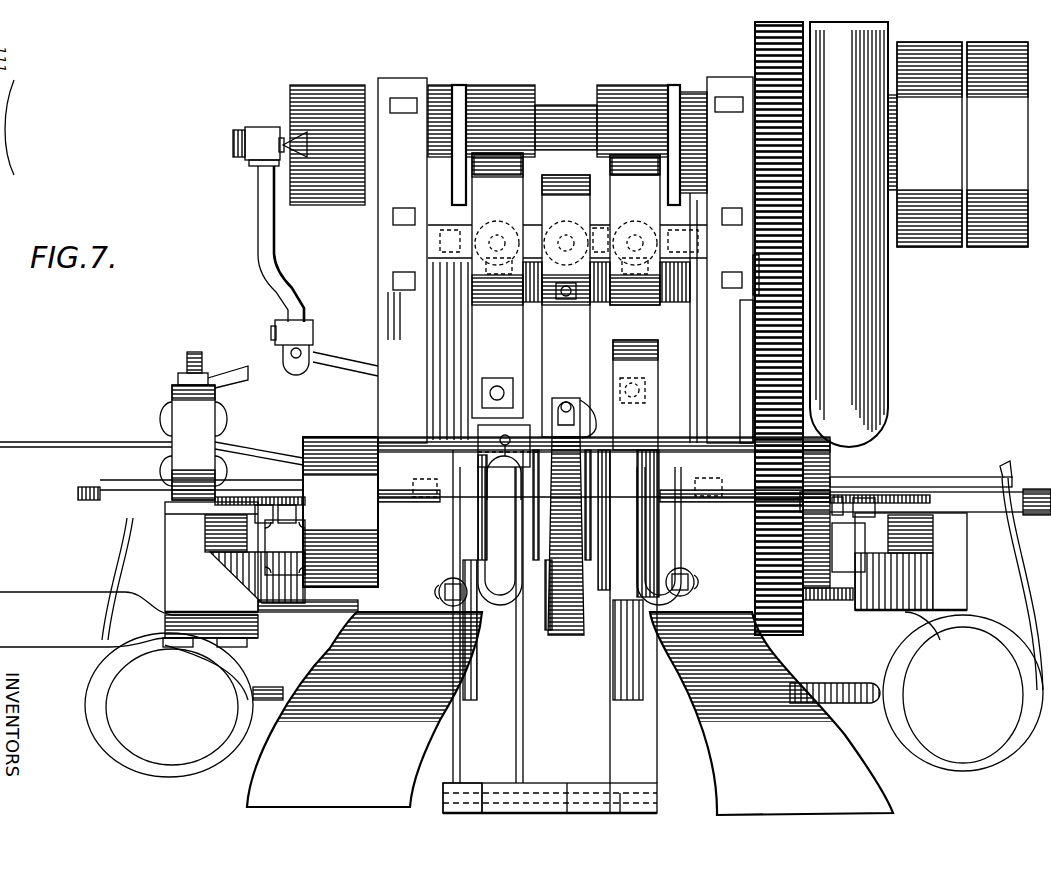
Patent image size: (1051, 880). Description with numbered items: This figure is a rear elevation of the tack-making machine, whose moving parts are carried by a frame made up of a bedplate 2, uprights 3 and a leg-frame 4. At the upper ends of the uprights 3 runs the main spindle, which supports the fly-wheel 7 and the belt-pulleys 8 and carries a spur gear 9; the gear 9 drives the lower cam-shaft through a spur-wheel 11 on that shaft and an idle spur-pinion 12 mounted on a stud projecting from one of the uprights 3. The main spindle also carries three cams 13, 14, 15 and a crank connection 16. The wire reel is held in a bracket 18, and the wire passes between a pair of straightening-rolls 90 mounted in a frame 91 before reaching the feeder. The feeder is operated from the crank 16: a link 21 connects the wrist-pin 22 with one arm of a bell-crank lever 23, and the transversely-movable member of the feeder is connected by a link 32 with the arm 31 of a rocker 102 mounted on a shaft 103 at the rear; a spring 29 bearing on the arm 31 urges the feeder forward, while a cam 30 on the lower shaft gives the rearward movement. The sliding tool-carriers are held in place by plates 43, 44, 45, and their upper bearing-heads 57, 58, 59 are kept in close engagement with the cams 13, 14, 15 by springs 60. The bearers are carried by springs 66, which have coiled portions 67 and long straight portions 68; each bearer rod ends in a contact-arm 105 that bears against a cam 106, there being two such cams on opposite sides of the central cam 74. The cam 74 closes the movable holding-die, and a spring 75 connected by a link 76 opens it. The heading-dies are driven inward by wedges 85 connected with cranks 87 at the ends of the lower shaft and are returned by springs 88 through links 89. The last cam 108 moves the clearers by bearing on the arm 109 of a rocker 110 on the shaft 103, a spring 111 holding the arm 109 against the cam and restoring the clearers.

The bedplate 2 is at (566, 570).
The uprights 3 is at (565, 260).
The leg-frame 4 is at (365, 742).
The fly-wheel 7 is at (849, 234).
The belt-pulleys 8 is at (958, 144).
The gear 9 is at (806, 72).
The spur-wheel 11 is at (753, 418).
The idle spur-pinion 12 is at (800, 258).
The cam 13 is at (638, 85).
The cam 14 is at (565, 108).
The cam 15 is at (490, 85).
The crank connection 16 is at (262, 128).
The bracket 18 is at (129, 619).
The link 21 is at (258, 240).
The wrist-pin 22 is at (233, 143).
The bell-crank lever 23 is at (333, 352).
The spring 29 is at (478, 510).
The cam 30 is at (388, 512).
The arm 31 is at (488, 616).
The link 32 is at (509, 462).
The plate 43 is at (635, 302).
The plate 44 is at (566, 306).
The plate 45 is at (497, 285).
The bearing-head 57 is at (607, 180).
The bearing-head 58 is at (540, 205).
The bearing-head 59 is at (470, 180).
The springs 60 is at (567, 235).
The springs 66 is at (250, 675).
The coiled portions 67 is at (128, 760).
The straight portions 68 is at (840, 683).
The cam 74 is at (552, 420).
The spring 75 is at (530, 536).
The link 76 is at (595, 400).
The wedges 85 is at (866, 472).
The cranks 87 is at (565, 547).
The springs 88 is at (118, 540).
The links 89 is at (150, 444).
The straightening-rolls 90 is at (224, 416).
The frame 91 is at (210, 426).
The rocker 102 is at (542, 788).
The shaft 103 is at (443, 795).
The contact-arm 105 is at (480, 535).
The cam 106 is at (538, 605).
The cam 108 is at (660, 520).
The arm 109 is at (633, 616).
The rocker 110 is at (626, 788).
The spring 111 is at (639, 377).